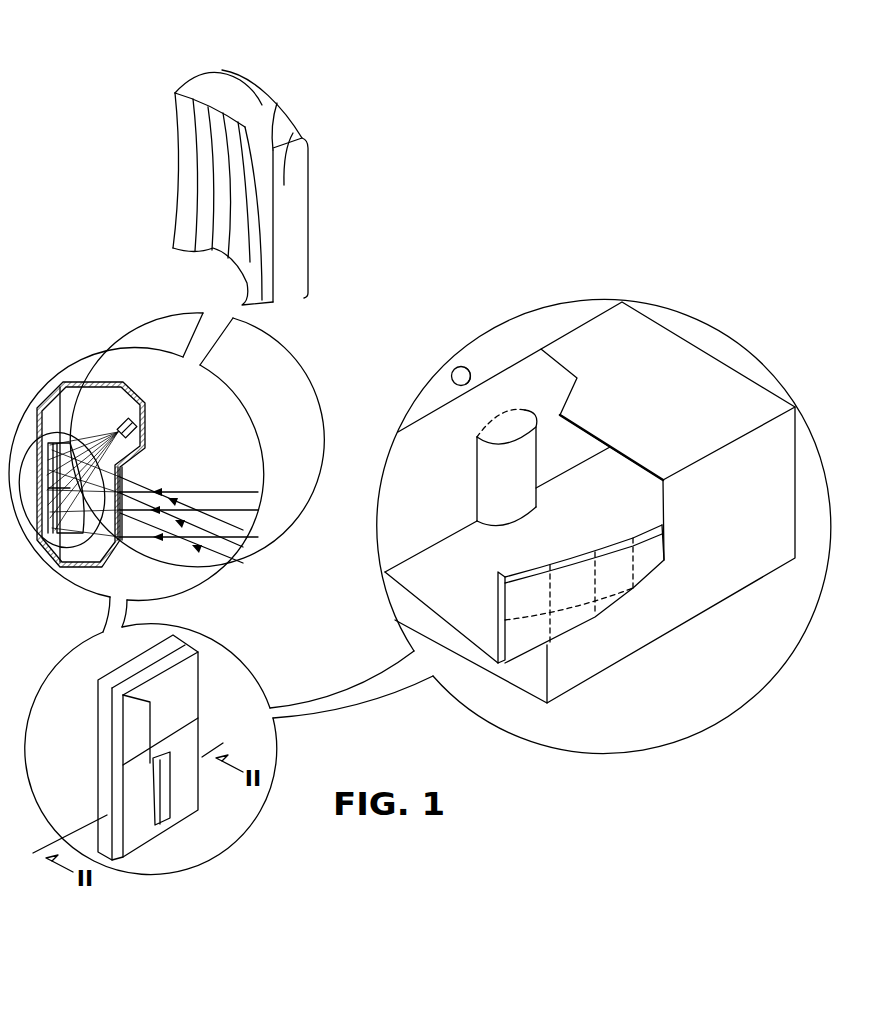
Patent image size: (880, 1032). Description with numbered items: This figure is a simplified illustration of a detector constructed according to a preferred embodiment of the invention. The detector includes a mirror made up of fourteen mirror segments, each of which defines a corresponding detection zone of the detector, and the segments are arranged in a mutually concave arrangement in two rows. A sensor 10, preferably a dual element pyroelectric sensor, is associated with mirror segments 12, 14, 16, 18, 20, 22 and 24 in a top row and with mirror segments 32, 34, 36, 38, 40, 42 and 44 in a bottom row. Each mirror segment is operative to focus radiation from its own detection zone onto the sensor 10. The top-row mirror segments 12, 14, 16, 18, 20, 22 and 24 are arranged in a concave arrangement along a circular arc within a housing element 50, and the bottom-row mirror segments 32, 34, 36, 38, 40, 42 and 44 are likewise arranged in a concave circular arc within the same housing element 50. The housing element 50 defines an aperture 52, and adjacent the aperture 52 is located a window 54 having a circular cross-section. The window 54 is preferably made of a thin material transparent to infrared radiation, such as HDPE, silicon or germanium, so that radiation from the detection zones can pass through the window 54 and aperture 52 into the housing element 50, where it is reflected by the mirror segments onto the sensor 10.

The sensor 10 is at (140, 407).
The mirror segment 12 is at (277, 185).
The mirror segment 14 is at (293, 133).
The mirror segment 16 is at (277, 103).
The mirror segment 18 is at (240, 90).
The mirror segment 20 is at (247, 67).
The mirror segment 22 is at (208, 110).
The mirror segment 24 is at (187, 102).
The mirror segment 32 is at (247, 283).
The mirror segment 34 is at (237, 267).
The mirror segment 36 is at (227, 257).
The mirror segment 38 is at (213, 247).
The mirror segment 40 is at (198, 257).
The mirror segment 42 is at (187, 218).
The mirror segment 44 is at (180, 197).
The housing element 50 is at (105, 382).
The aperture 52 is at (123, 520).
The window 54 is at (477, 470).